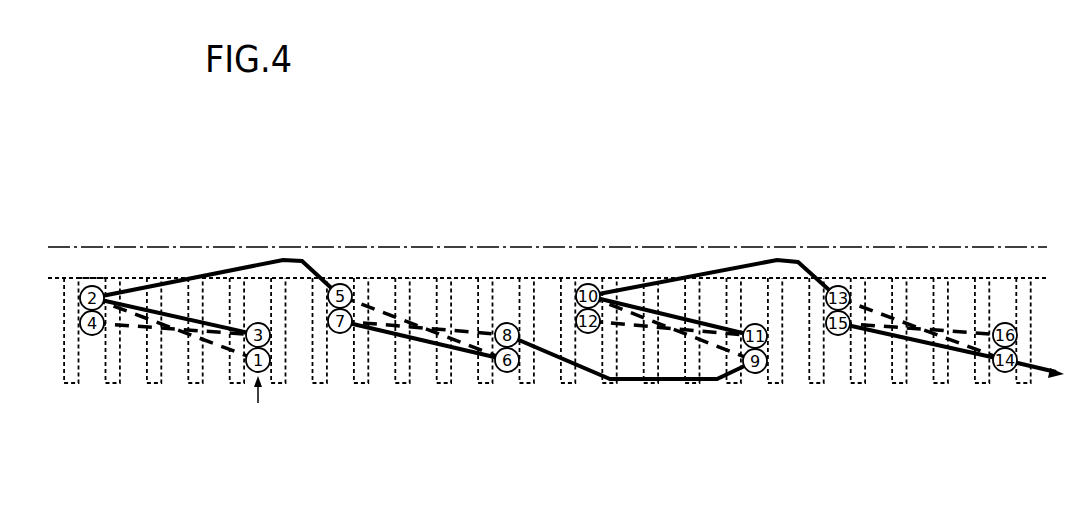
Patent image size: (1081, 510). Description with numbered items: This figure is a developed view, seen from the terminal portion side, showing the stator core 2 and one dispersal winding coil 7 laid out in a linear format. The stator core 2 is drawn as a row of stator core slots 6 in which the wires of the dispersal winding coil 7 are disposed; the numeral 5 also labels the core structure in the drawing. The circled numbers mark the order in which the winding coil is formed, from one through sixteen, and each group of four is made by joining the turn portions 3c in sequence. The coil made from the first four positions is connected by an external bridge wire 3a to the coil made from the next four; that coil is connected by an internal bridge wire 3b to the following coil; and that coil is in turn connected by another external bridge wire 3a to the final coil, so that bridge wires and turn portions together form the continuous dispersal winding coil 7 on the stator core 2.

The stator core 2 is at (95, 253).
The external bridge wire 3a is at (305, 262).
The internal bridge wire 3b is at (630, 380).
The turn portions 3c is at (170, 309).
The tooth 5 is at (112, 382).
The stator core slot 6 is at (92, 382).
The dispersal winding coil 7 is at (223, 347).